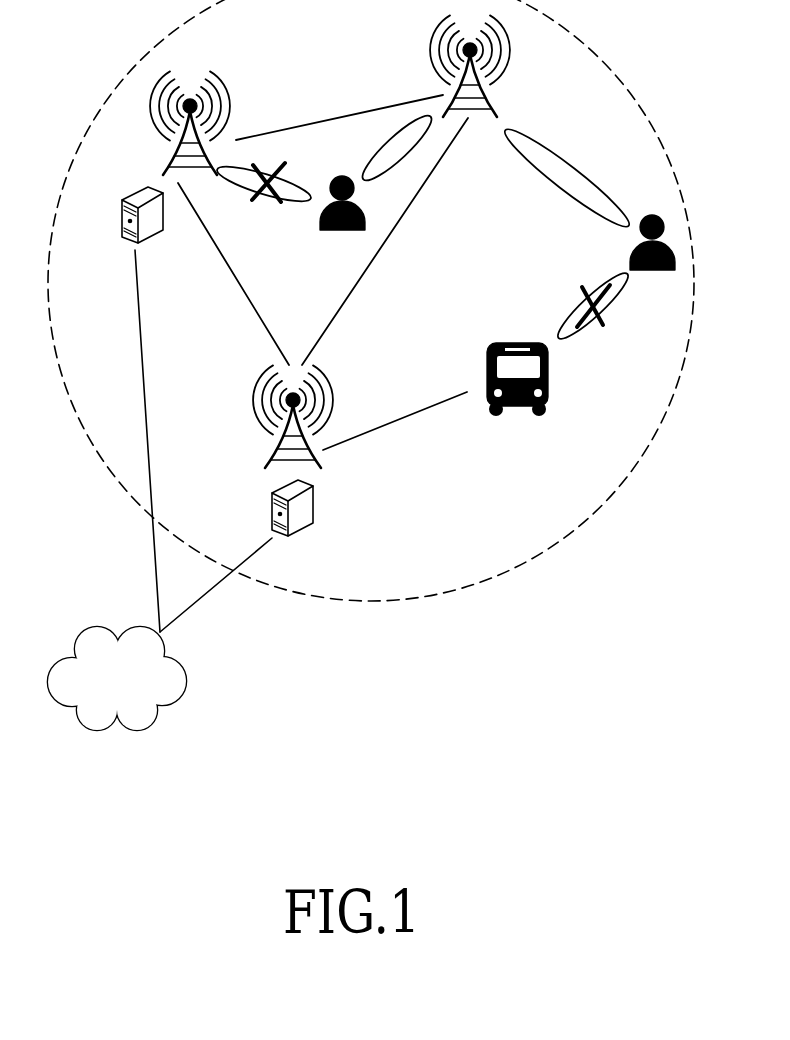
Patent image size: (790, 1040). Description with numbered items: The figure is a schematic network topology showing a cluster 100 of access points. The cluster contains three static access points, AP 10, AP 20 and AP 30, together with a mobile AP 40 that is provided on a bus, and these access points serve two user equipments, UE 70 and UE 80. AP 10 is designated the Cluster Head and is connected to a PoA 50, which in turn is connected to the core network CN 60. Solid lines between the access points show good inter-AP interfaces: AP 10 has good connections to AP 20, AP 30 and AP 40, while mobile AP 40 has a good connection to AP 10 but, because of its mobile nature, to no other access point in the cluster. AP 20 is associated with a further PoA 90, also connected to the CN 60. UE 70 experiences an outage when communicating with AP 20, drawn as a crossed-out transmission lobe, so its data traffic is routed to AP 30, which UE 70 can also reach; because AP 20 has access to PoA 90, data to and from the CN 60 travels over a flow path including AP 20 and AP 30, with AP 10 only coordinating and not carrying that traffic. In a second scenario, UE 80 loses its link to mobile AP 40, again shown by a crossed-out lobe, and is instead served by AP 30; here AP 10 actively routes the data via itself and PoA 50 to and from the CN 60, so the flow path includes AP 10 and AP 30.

The cluster 100 is at (512, 574).
The AP 10 is at (286, 425).
The AP 20 is at (181, 125).
The AP 30 is at (482, 66).
The mobile AP 40 is at (533, 381).
The PoA 50 is at (301, 524).
The CN 60 is at (117, 678).
The UE 70 is at (342, 220).
The UE 80 is at (652, 262).
The PoA 90 is at (156, 228).